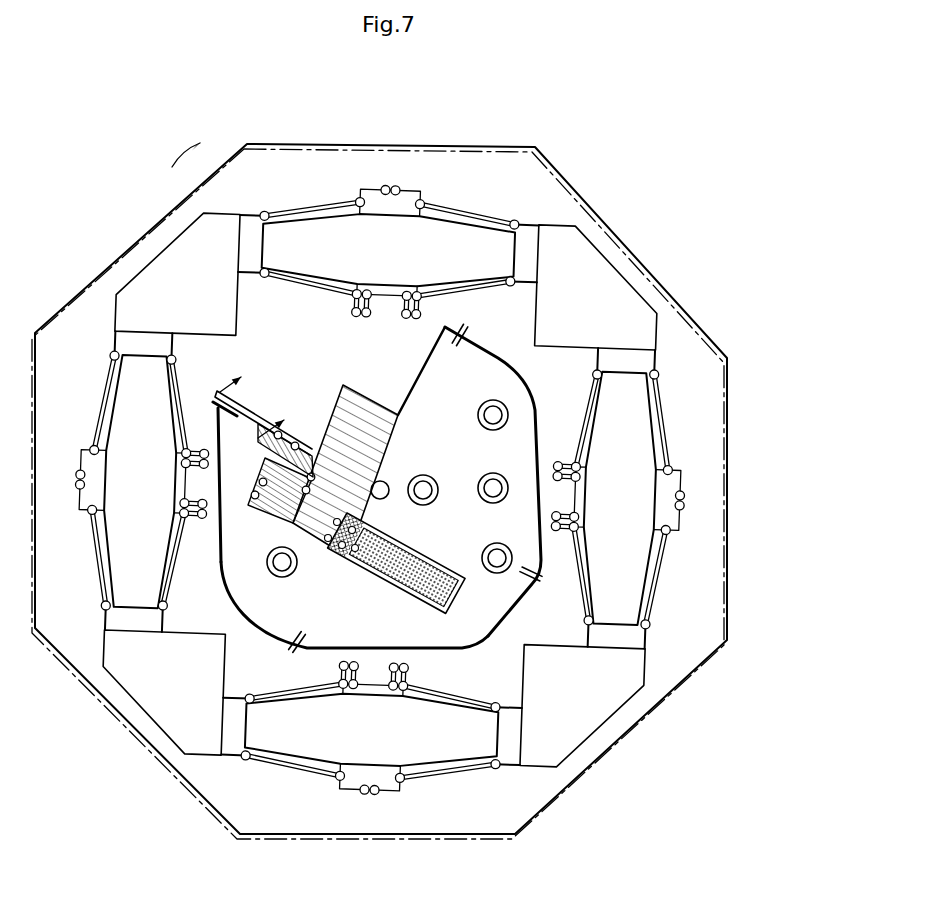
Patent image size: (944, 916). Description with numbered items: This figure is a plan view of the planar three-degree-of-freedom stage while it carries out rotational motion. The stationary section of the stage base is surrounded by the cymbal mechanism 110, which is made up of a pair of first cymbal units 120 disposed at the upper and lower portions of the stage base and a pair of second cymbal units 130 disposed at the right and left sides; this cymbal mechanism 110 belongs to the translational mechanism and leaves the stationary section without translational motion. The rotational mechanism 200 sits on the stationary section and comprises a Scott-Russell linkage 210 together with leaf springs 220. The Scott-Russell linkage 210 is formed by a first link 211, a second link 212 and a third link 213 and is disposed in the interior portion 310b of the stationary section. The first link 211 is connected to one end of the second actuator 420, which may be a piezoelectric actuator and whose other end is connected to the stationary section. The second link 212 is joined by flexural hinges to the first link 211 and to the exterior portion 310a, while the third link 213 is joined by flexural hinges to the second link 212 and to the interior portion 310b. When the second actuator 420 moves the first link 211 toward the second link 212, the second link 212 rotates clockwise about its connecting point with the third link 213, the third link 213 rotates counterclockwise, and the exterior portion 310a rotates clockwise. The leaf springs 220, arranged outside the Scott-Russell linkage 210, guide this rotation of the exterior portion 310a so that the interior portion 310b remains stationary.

The cymbal mechanism 110 is at (379, 490).
The first cymbal unit 120 is at (503, 198).
The second cymbal unit 130 is at (676, 405).
The rotational mechanism 200 is at (492, 645).
The Scott-Russell linkage 210 is at (113, 847).
The first link 211 is at (333, 527).
The second link 212 is at (312, 510).
The third link 213 is at (308, 493).
The leaf spring 220 is at (462, 328).
The exterior portion 310a is at (280, 363).
The interior portion 310b is at (513, 523).
The second actuator 420 is at (413, 557).